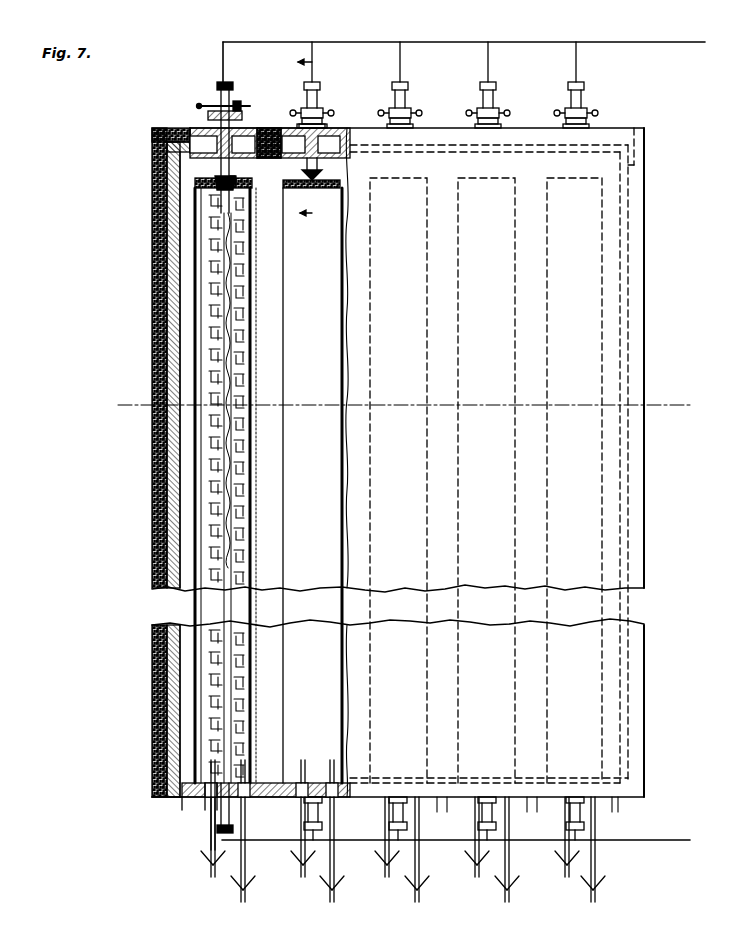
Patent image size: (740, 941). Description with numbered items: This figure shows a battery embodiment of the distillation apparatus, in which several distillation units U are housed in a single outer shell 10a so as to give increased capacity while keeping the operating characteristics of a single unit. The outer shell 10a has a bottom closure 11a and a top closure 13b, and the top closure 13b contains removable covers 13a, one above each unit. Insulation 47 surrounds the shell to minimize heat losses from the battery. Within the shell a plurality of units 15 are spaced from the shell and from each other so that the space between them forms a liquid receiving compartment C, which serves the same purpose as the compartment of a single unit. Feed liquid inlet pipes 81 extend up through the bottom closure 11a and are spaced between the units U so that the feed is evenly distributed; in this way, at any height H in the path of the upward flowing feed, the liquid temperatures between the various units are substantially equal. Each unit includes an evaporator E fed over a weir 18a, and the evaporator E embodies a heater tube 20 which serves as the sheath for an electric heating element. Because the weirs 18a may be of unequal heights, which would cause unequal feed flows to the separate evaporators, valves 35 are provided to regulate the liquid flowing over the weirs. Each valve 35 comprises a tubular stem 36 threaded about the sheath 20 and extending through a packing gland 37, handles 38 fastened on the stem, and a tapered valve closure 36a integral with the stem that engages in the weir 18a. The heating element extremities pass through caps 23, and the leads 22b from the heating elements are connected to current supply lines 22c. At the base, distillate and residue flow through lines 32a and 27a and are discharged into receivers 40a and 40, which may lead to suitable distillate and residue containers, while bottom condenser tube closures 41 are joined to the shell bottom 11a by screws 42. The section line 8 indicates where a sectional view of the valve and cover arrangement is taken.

The current supply lines 22c is at (628, 42).
The heating element leads 22b is at (223, 70).
The caps 23 is at (233, 88).
The section line 8 is at (314, 140).
The removable covers 13a is at (200, 128).
The top closure 13b is at (152, 148).
The insulation 47 is at (160, 465).
The outer shell 10a is at (158, 548).
The bottom closure 11a is at (165, 799).
The tubular stem 36 is at (308, 146).
The handles 38 is at (252, 100).
The packing gland 37 is at (242, 115).
The valves 35 is at (216, 186).
The tapered valve closure 36a is at (252, 172).
The weirs 18a is at (292, 188).
The heater tube 20 is at (238, 248).
The distillation unit U is at (253, 366).
The evaporator E is at (243, 448).
The units 15 is at (251, 480).
The liquid receiving compartment C is at (232, 485).
The height H is at (404, 396).
The feed liquid inlet pipes 81 is at (180, 810).
The screws 42 is at (214, 811).
The residue line 27a is at (211, 840).
The distillate line 32a is at (246, 858).
The bottom condenser tube closures 41 is at (256, 783).
The residue receiver 40 is at (211, 866).
The distillate receiver 40a is at (247, 896).